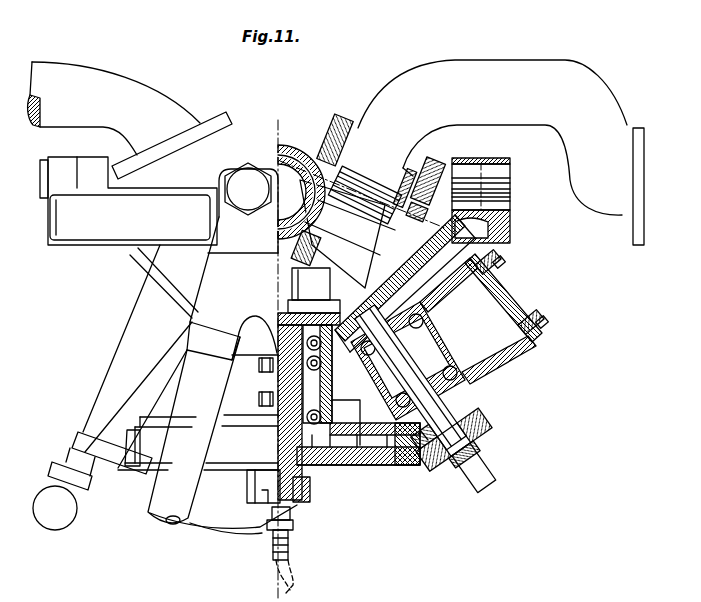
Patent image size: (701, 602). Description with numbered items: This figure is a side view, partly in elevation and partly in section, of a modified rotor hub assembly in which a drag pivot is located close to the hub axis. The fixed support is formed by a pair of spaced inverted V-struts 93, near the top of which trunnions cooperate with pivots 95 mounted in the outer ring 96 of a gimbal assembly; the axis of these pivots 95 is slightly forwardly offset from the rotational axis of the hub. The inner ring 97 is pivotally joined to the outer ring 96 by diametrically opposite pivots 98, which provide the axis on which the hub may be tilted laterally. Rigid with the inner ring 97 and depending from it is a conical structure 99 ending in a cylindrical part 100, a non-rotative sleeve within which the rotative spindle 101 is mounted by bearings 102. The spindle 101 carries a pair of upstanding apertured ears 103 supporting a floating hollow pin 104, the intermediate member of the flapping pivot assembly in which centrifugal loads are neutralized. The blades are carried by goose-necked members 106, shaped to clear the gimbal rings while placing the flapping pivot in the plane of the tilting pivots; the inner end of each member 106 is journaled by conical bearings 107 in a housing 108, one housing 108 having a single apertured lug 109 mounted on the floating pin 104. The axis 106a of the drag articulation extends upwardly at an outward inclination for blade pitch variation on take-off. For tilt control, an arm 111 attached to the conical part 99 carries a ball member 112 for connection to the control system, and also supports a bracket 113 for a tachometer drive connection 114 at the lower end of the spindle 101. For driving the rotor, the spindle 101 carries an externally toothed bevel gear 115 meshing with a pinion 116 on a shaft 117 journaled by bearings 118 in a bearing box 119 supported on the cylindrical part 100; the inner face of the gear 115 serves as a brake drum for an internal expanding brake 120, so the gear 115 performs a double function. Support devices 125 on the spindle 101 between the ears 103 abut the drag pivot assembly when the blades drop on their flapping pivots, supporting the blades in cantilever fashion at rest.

The inverted V-struts 93 is at (185, 393).
The pivots 95 is at (246, 178).
The outer ring 96 is at (90, 228).
The inner ring 97 is at (472, 158).
The pivots 98 is at (507, 185).
The conical structure 99 is at (403, 272).
The cylindrical part 100 is at (363, 430).
The rotative spindle 101 is at (308, 480).
The bearings 102 is at (283, 373).
The upstanding apertured ears 103 is at (420, 341).
The floating hollow pin 104 is at (292, 162).
The goose-necked members 106 is at (113, 76).
The axis of the drag articulation 106a is at (297, 276).
The conical bearings 107 is at (423, 160).
The housing 108 is at (205, 135).
The single apertured lug 109 is at (305, 150).
The arm 111 is at (138, 320).
The ball member 112 is at (55, 523).
The bracket 113 is at (208, 523).
The tachometer drive connection 114 is at (273, 543).
The bevel gear 115 is at (435, 470).
The pinion 116 is at (488, 417).
The shaft 117 is at (488, 473).
The bearings 118 is at (470, 350).
The bearing box 119 is at (507, 350).
The internal expanding brake 120 is at (423, 470).
The support devices 125 is at (302, 288).